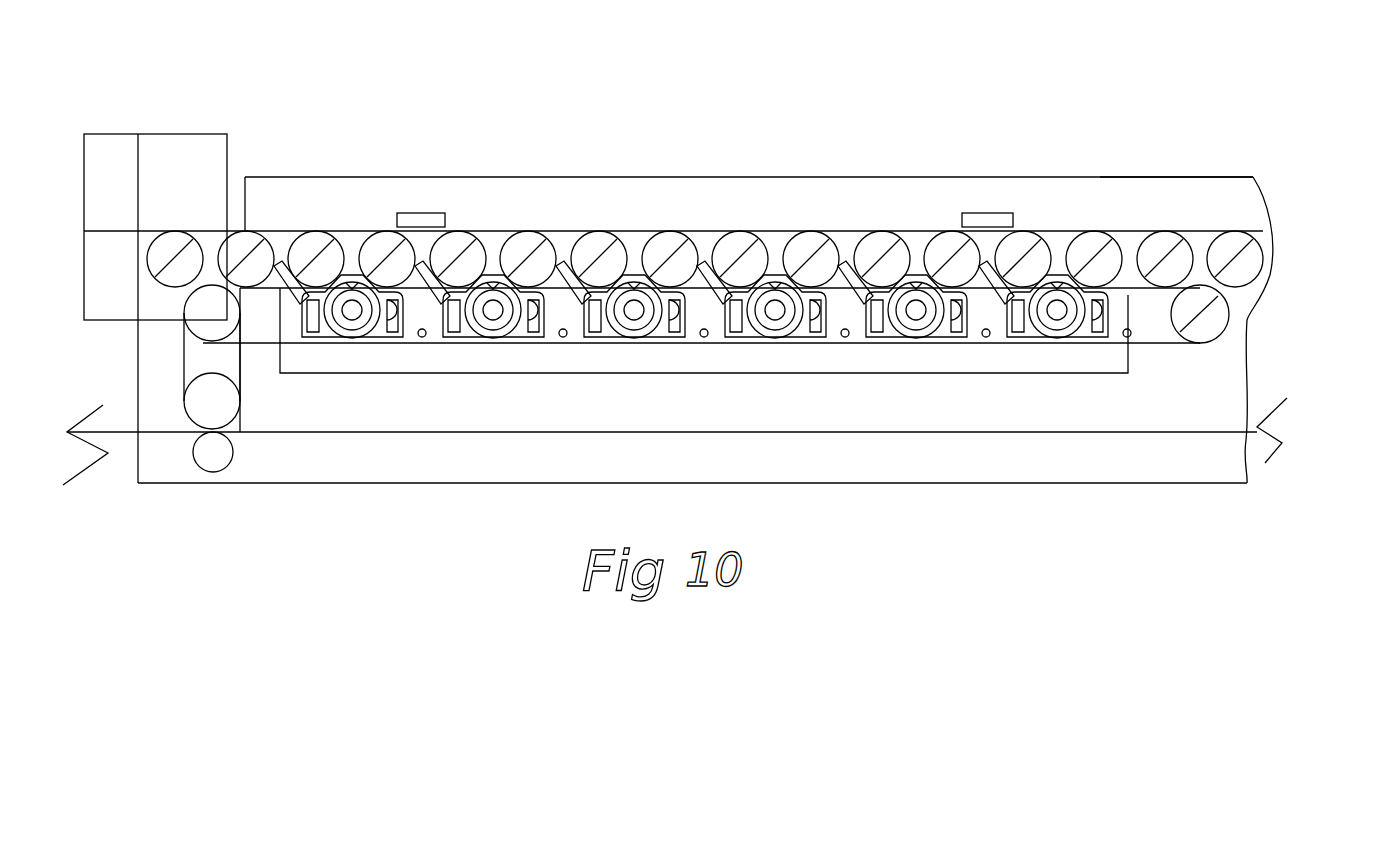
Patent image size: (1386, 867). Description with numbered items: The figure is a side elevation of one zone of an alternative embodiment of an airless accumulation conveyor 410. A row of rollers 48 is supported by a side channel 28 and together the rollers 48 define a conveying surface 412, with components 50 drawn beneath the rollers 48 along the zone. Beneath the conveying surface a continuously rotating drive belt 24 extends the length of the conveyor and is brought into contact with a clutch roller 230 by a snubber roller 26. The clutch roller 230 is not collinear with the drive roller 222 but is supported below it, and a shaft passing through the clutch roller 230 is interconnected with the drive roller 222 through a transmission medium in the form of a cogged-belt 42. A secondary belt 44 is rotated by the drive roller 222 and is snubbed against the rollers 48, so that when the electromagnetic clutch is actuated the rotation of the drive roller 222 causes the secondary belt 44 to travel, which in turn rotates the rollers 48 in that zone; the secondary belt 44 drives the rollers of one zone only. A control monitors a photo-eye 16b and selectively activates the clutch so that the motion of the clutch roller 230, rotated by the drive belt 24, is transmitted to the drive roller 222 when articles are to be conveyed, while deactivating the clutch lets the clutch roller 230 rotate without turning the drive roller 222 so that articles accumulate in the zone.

The drive roller 222 is at (183, 312).
The rollers 48 is at (243, 231).
The roller drive mechanism 50 is at (310, 287).
The photo-eye 16b is at (432, 213).
The side channel 28 is at (917, 178).
The airless accumulation conveyor 410 is at (1125, 175).
The conveying surface 412 is at (1245, 225).
The cogged-belt 42 is at (185, 358).
The clutch roller 230 is at (240, 415).
The snubber roller 26 is at (233, 460).
The drive belt 24 is at (335, 432).
The secondary belt 44 is at (570, 343).